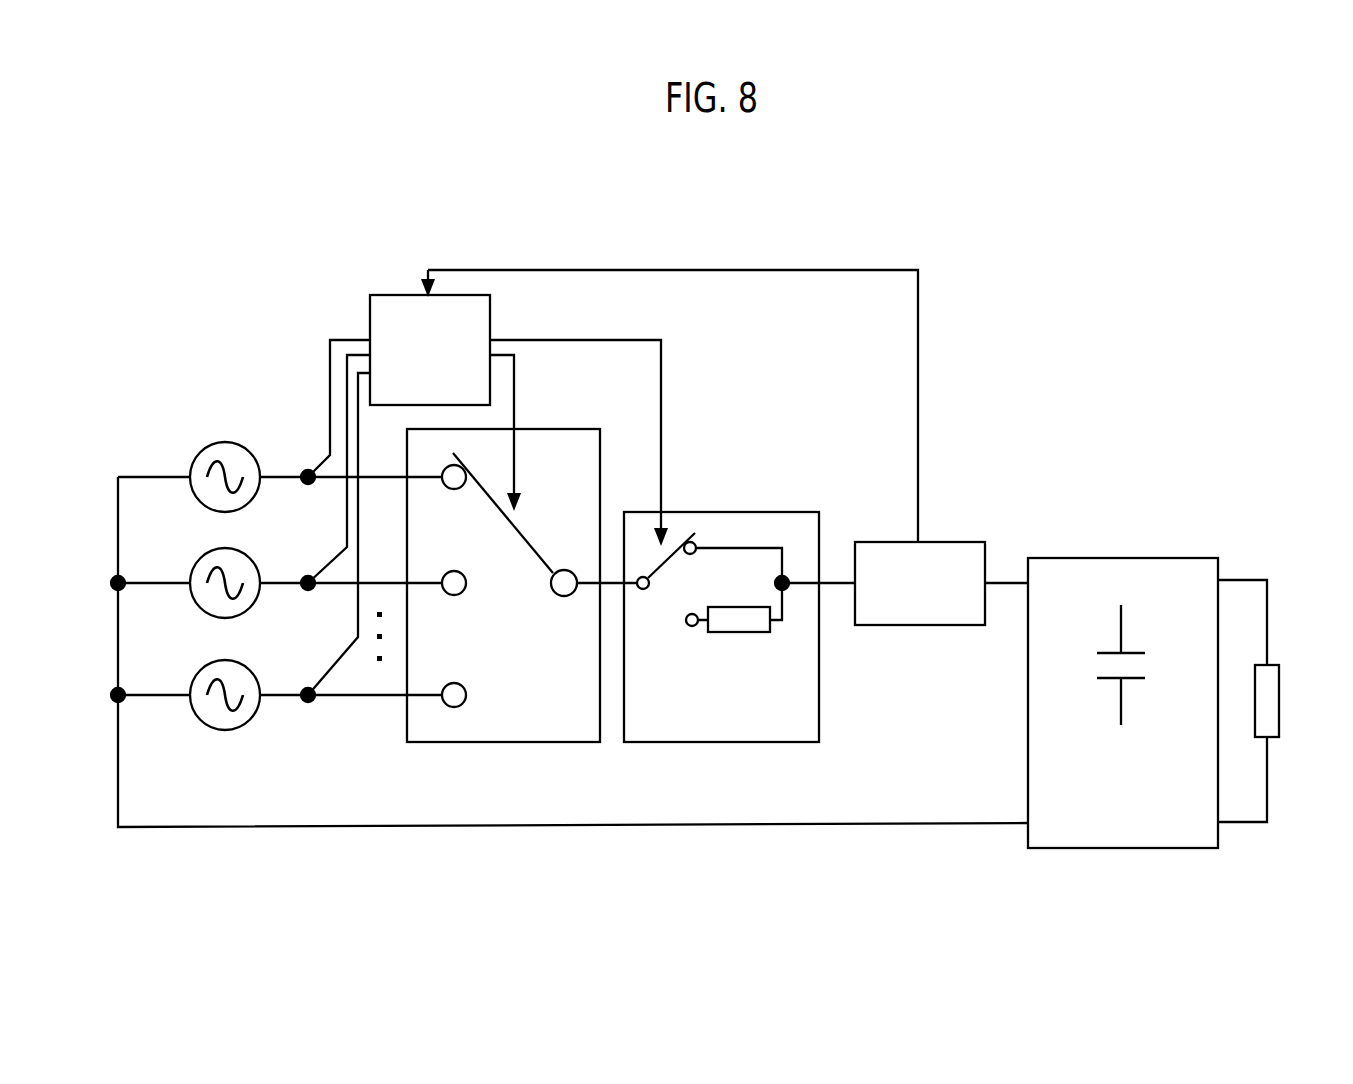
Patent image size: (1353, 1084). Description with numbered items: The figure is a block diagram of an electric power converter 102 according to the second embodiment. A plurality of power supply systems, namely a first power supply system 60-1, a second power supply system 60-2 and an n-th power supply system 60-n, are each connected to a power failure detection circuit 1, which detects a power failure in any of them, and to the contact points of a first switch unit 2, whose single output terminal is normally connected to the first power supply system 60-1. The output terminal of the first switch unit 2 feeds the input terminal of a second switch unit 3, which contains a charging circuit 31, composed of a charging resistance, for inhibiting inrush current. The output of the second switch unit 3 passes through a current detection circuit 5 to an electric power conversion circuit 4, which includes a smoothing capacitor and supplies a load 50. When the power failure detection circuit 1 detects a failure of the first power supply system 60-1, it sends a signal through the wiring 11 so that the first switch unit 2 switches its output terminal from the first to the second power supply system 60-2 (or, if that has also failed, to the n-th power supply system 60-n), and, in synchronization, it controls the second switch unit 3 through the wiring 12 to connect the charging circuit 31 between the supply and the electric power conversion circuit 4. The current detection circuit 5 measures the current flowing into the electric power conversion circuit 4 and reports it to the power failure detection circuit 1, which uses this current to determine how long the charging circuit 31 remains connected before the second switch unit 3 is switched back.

The electric power converter 102 is at (752, 224).
The power failure detection circuit 1 is at (388, 293).
The wiring 11 is at (517, 400).
The wiring 12 is at (583, 338).
The first switch unit 2 is at (575, 428).
The second switch unit 3 is at (721, 632).
The charging circuit 31 is at (760, 633).
The current detection circuit 5 is at (957, 540).
The electric power conversion circuit 4 is at (1170, 557).
The load 50 is at (1281, 682).
The first power supply system 60-1 is at (257, 452).
The second power supply system 60-2 is at (260, 573).
The n-th power supply system 60-n is at (255, 672).